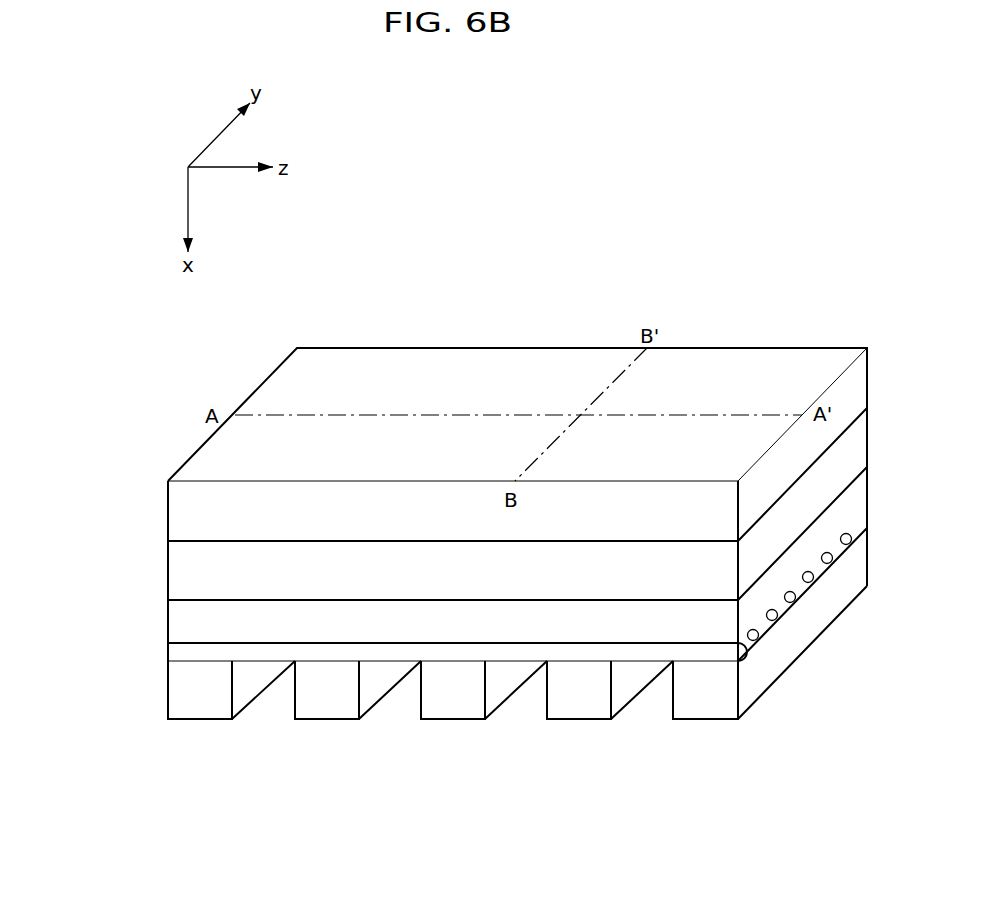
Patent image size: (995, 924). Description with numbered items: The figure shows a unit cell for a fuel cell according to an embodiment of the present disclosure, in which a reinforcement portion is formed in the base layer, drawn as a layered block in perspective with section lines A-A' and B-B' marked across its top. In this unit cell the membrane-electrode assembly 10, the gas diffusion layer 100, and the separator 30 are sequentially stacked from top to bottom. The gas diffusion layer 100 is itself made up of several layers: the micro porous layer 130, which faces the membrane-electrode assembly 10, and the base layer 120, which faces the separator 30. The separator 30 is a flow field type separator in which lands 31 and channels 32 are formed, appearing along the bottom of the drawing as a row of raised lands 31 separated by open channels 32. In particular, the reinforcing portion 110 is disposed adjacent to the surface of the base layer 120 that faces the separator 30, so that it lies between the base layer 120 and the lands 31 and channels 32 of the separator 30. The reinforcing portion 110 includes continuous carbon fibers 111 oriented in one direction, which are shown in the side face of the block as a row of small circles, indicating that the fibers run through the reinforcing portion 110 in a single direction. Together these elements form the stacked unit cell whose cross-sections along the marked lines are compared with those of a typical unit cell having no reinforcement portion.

The membrane-electrode assembly 10 is at (192, 512).
The gas diffusion layer 100 is at (448, 652).
The reinforcing portion 110 is at (169, 661).
The continuous carbon fibers 111 is at (793, 603).
The base layer 120 is at (97, 602).
The micro porous layer 130 is at (97, 540).
The separator 30 is at (517, 718).
The lands 31 is at (207, 707).
The channels 32 is at (272, 707).